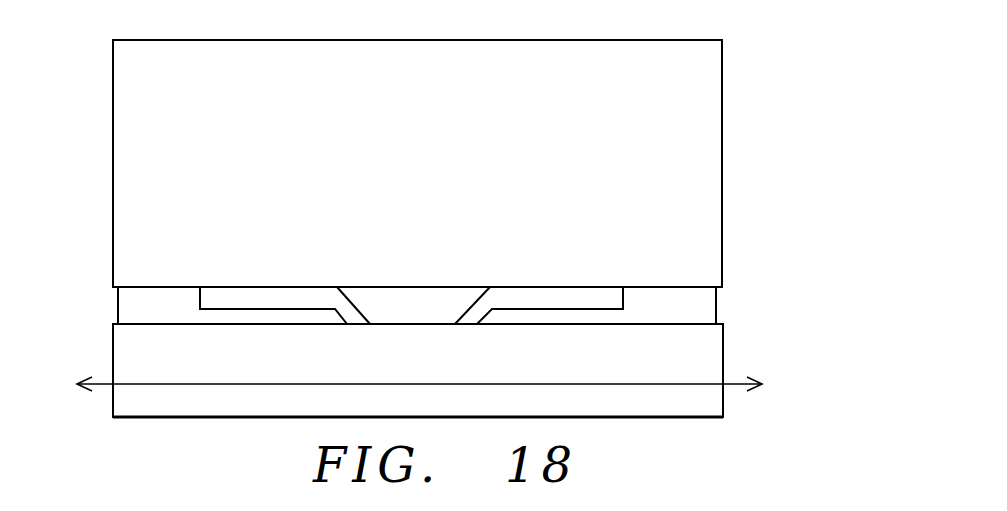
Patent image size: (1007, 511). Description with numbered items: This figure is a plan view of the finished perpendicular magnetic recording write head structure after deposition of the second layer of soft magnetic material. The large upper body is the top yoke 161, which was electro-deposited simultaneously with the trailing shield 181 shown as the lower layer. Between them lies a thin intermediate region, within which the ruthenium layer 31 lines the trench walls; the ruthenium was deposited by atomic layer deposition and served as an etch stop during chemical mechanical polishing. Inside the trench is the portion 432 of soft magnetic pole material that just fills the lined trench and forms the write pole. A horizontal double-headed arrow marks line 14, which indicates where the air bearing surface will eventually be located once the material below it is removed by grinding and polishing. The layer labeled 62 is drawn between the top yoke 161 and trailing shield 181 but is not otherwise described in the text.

The top yoke 161 is at (690, 143).
The bonding layer 62 is at (695, 300).
The layer of ruthenium 31 is at (210, 300).
The portion of soft magnetic material filling the trench 432 is at (407, 308).
The trailing shield 181 is at (700, 347).
The line showing ABS location 14 is at (433, 383).